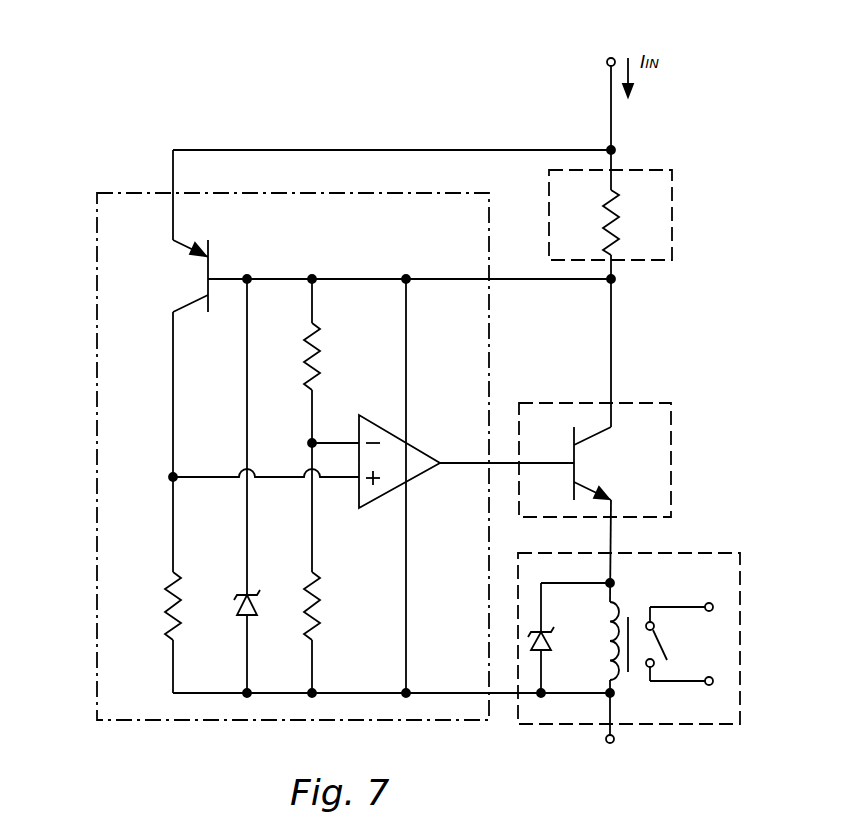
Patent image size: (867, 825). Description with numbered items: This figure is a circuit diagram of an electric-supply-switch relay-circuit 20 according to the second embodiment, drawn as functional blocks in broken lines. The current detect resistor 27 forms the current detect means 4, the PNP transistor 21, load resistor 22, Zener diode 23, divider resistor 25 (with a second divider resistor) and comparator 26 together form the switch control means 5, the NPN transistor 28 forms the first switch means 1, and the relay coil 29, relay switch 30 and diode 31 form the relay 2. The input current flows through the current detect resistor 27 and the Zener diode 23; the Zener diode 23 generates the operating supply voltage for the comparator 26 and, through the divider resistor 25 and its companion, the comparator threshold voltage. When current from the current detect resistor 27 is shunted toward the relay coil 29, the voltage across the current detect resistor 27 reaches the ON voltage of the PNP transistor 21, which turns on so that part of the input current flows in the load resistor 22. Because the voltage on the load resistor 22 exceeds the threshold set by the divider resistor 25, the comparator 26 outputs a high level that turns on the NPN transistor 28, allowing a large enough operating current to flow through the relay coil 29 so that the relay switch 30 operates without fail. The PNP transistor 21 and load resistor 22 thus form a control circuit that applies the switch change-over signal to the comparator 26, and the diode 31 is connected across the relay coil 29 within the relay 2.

The electric-supply-switch relay-circuit 20 is at (265, 125).
The switch control means 5 is at (135, 192).
The PNP transistor 21 is at (208, 280).
The load resistor 22 is at (165, 600).
The Zener diode 23 is at (238, 610).
The divider resistor 25 is at (320, 596).
The comparator 26 is at (420, 447).
The current detect resistor 27 is at (618, 225).
The current detect means 4 is at (672, 238).
The first switch means 1 is at (671, 432).
The NPN transistor 28 is at (576, 452).
The relay 2 is at (683, 548).
The relay coil 29 is at (602, 640).
The relay switch 30 is at (665, 640).
The relay-circuit diode 31 is at (548, 645).